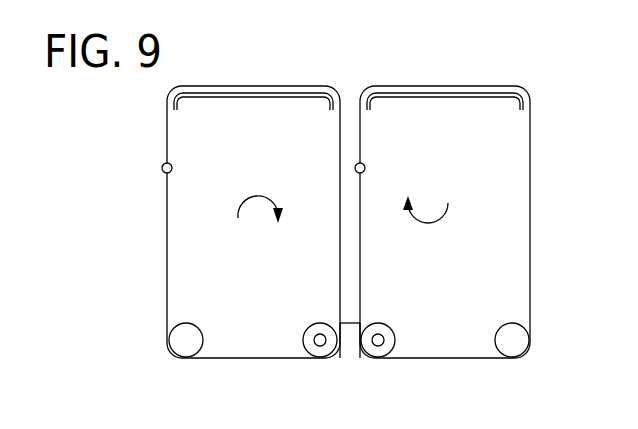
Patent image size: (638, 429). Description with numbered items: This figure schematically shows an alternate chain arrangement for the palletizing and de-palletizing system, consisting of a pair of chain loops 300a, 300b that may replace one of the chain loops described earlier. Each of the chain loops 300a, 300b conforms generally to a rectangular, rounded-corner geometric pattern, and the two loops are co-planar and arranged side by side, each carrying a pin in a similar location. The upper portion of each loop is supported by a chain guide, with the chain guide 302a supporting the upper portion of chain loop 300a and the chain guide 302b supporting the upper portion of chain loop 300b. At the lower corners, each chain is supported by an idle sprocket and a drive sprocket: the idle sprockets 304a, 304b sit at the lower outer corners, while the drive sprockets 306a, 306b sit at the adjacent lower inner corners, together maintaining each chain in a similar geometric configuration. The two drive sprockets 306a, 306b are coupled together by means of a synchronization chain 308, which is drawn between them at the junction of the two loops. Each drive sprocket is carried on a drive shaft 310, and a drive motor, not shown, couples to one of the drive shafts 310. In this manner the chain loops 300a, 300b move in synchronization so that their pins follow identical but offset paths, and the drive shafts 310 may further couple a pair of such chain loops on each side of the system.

The chain loop 300a is at (301, 76).
The chain loop 300b is at (401, 75).
The chain guide 302a is at (203, 96).
The chain guide 302b is at (408, 96).
The idle sprocket 304a is at (203, 340).
The idle sprocket 304b is at (496, 339).
The drive sprocket 306a is at (319, 357).
The drive sprocket 306b is at (395, 344).
The synchronization chain 308 is at (352, 325).
The drive shaft 310 is at (313, 339).